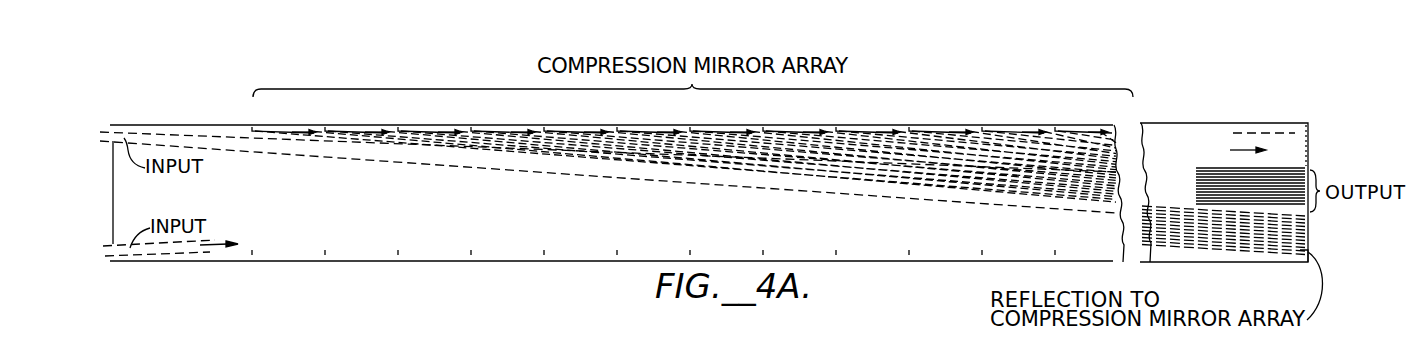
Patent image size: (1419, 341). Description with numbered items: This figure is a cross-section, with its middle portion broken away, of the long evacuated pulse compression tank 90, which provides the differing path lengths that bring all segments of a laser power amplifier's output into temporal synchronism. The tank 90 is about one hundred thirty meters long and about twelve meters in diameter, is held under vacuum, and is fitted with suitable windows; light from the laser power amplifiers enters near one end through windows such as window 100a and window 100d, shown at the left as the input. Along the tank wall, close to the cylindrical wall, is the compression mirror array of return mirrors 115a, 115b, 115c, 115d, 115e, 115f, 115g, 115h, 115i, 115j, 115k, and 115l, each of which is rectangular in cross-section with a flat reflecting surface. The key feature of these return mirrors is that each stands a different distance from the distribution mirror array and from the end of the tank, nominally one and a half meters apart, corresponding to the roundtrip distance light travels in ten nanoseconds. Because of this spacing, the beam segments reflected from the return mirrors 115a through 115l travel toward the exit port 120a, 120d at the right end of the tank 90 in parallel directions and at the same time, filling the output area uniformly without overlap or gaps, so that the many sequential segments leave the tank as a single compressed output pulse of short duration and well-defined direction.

The window 100d is at (110, 133).
The window 100a is at (112, 256).
The return mirror 115a is at (254, 127).
The return mirror 115b is at (327, 127).
The return mirror 115c is at (400, 127).
The return mirror 115d is at (473, 127).
The return mirror 115e is at (546, 127).
The return mirror 115f is at (619, 127).
The return mirror 115g is at (692, 127).
The return mirror 115h is at (765, 127).
The return mirror 115i is at (838, 127).
The return mirror 115j is at (911, 127).
The return mirror 115k is at (984, 127).
The return mirror 115l is at (1058, 130).
The tank 90 is at (1038, 124).
The exit port 120a is at (1298, 145).
The exit port 120d is at (1304, 263).